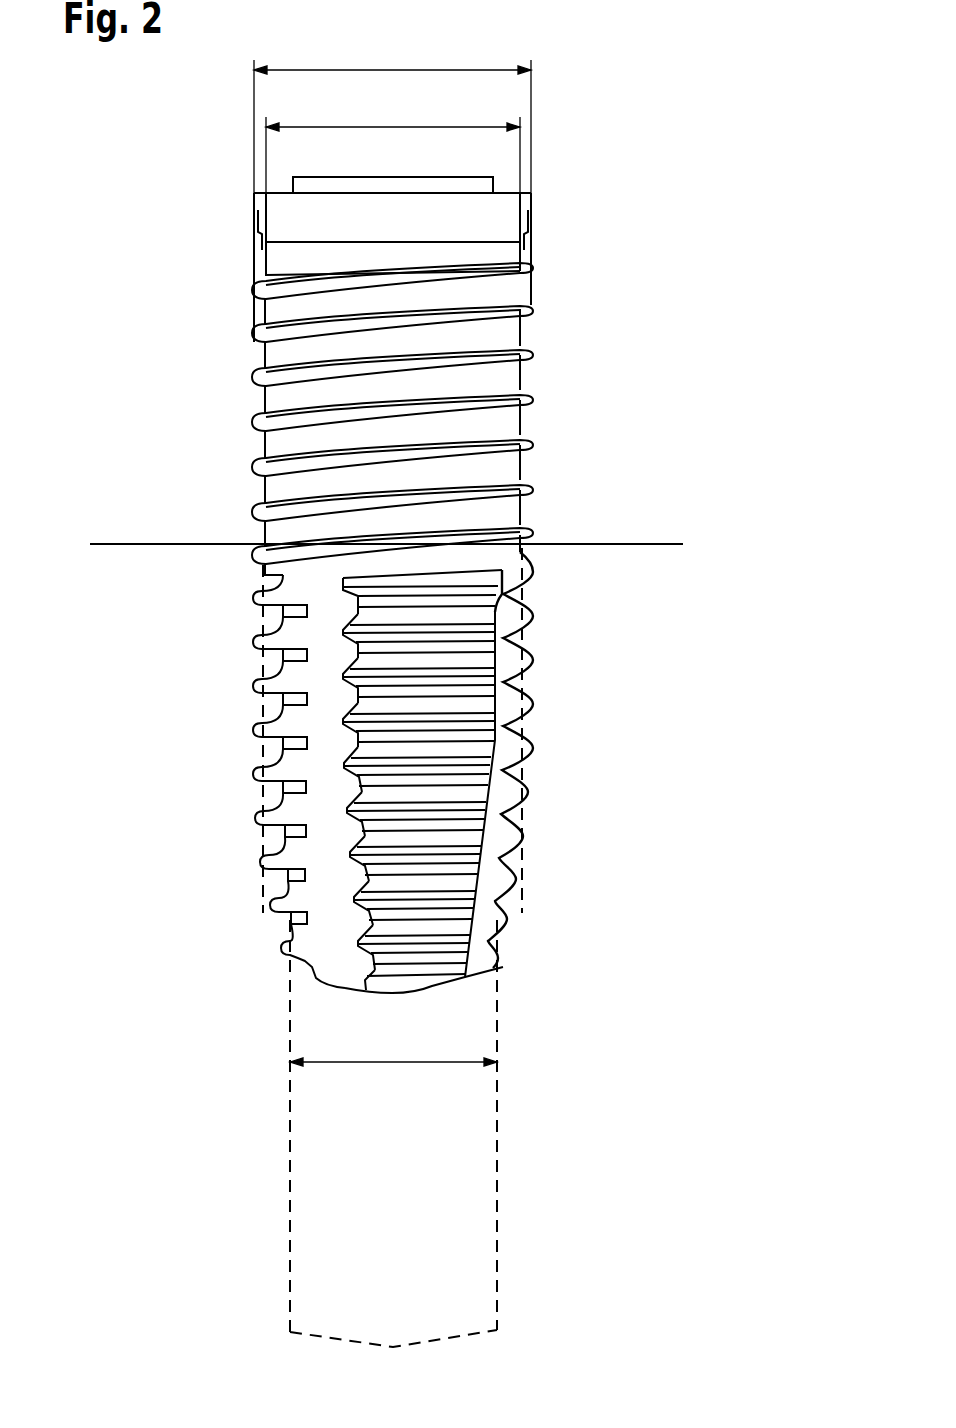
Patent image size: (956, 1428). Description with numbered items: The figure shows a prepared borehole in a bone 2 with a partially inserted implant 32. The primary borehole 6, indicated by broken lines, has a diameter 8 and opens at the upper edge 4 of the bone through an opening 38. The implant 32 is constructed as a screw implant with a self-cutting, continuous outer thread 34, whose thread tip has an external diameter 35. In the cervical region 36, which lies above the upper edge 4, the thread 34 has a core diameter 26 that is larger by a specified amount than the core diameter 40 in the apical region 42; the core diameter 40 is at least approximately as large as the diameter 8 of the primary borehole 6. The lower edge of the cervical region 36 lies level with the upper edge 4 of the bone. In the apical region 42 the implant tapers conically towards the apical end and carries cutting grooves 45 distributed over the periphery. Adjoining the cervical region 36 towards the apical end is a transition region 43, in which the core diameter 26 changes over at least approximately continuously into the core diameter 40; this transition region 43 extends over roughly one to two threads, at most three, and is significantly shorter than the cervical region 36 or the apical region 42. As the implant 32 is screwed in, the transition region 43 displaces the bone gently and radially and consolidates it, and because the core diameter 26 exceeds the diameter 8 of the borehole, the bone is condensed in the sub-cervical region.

The bone 2 is at (572, 1053).
The upper edge 4 is at (130, 542).
The primary borehole 6 is at (285, 971).
The diameter 8 is at (392, 1060).
The core diameter 26 is at (396, 125).
The implant 32 is at (527, 262).
The outer thread 34 is at (531, 395).
The external diameter 35 is at (396, 68).
The cervical region 36 is at (264, 357).
The opening 38 is at (531, 543).
The core diameter 40 is at (500, 902).
The apical region 42 is at (262, 788).
The transition region 43 is at (264, 543).
The cutting grooves 45 is at (505, 831).